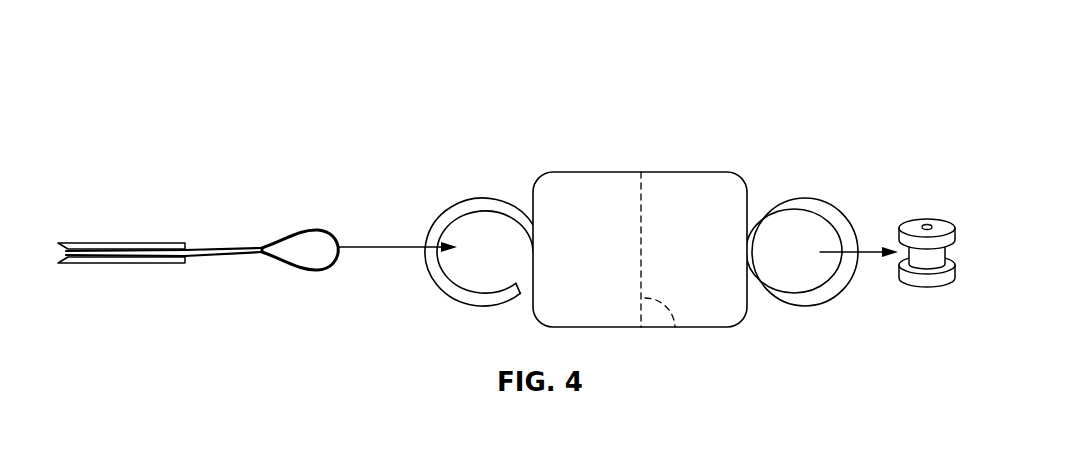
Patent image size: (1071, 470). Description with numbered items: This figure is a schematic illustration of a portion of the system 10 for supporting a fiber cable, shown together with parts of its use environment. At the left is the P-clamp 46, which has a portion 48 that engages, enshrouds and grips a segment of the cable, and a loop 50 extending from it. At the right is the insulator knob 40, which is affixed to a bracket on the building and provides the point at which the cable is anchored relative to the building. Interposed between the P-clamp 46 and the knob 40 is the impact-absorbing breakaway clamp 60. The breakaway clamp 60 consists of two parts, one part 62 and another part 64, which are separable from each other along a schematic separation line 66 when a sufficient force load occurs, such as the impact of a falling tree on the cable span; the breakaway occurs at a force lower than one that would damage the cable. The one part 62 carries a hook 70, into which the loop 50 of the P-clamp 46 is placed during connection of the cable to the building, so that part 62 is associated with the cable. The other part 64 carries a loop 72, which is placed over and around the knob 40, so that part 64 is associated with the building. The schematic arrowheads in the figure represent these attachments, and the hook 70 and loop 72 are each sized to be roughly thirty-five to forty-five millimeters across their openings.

The system 10 is at (182, 52).
The insulator knob 40 is at (940, 226).
The P-clamp 46 is at (150, 230).
The portion 48 is at (93, 265).
The loop 50 is at (303, 232).
The impact-absorbing breakaway clamp 60 is at (628, 114).
The one part/portion 62 is at (552, 160).
The other part/portion 64 is at (726, 160).
The separation line 66 is at (676, 330).
The hook 70 is at (475, 198).
The loop 72 is at (787, 200).